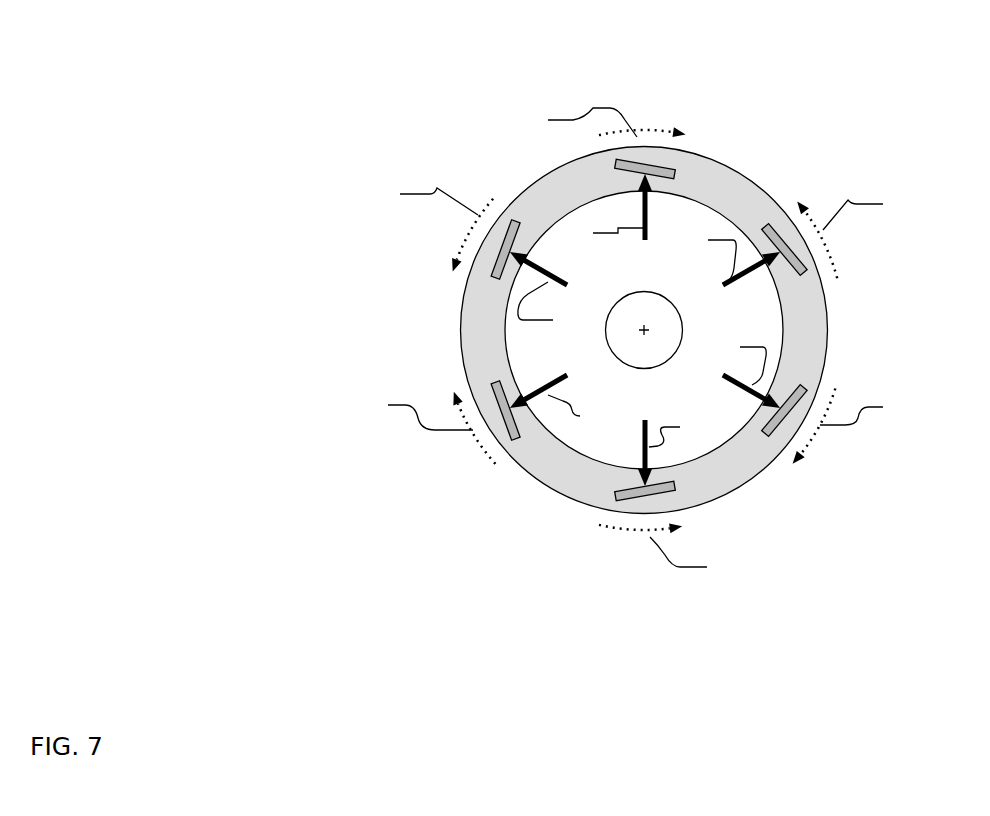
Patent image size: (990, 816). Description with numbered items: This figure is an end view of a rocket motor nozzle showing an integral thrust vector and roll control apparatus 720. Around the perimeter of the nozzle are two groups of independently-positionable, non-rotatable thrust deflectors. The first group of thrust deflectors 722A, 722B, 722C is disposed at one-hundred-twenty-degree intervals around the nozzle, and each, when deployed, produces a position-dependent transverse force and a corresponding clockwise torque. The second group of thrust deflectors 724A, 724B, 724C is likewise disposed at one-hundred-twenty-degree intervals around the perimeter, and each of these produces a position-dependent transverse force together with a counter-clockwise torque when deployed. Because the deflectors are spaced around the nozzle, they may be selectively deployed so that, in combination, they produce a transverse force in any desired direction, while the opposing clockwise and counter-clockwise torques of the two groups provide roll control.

The gimbal ring assembly 720 is at (370, 66).
The thrust deflector 722A is at (673, 177).
The thrust deflector 724A is at (803, 277).
The thrust deflector 722B is at (803, 387).
The thrust deflector 724B is at (673, 492).
The thrust deflector 722C is at (538, 388).
The thrust deflector 724C is at (492, 282).